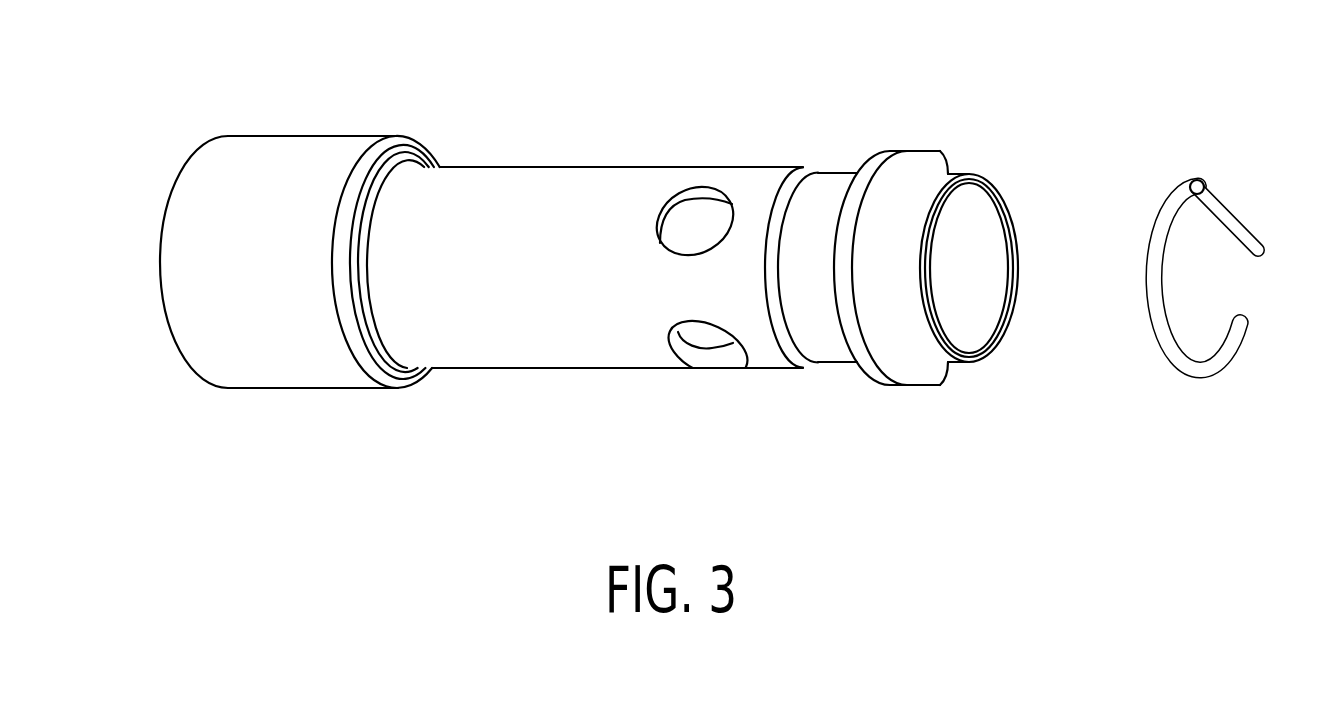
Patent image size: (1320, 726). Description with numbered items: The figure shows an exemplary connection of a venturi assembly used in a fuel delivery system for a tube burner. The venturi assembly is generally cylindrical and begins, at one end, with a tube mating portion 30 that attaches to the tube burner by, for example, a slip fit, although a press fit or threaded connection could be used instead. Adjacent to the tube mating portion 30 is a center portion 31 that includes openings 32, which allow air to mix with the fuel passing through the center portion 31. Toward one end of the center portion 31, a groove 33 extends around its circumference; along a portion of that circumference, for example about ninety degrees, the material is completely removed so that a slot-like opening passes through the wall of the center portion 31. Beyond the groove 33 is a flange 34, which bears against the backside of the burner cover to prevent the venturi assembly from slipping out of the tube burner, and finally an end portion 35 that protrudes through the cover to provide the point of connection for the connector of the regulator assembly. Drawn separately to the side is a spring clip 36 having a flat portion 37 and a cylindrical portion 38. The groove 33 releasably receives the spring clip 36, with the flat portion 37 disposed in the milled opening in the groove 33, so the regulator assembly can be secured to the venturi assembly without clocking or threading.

The tube mating portion 30 is at (353, 136).
The center portion 31 is at (610, 167).
The openings 32 is at (685, 230).
The groove 33 is at (812, 367).
The flange 34 is at (938, 162).
The end portion 35 is at (987, 175).
The spring clip 36 is at (1198, 176).
The flat portion 37 is at (1238, 217).
The cylindrical portion 38 is at (1145, 309).